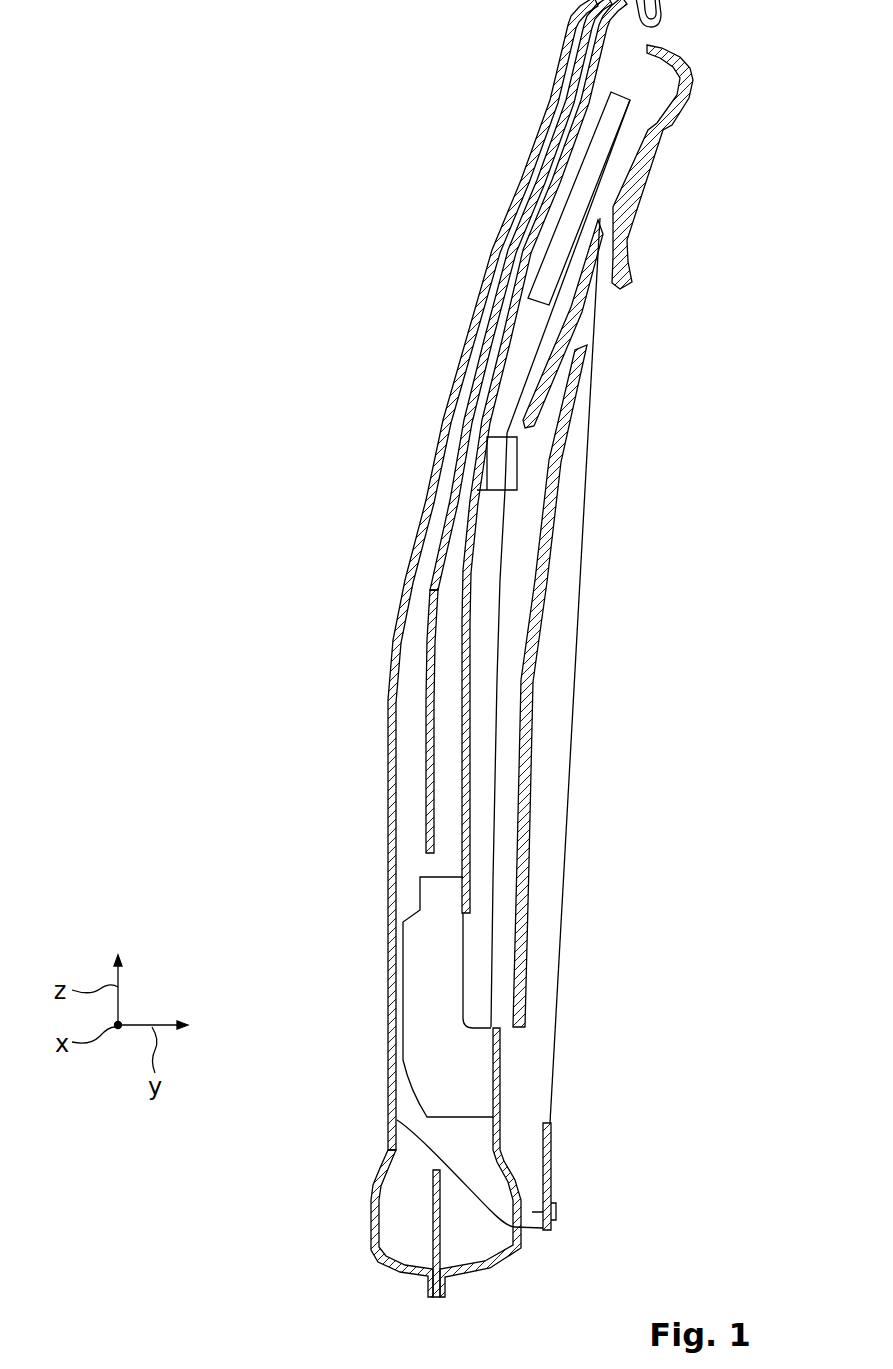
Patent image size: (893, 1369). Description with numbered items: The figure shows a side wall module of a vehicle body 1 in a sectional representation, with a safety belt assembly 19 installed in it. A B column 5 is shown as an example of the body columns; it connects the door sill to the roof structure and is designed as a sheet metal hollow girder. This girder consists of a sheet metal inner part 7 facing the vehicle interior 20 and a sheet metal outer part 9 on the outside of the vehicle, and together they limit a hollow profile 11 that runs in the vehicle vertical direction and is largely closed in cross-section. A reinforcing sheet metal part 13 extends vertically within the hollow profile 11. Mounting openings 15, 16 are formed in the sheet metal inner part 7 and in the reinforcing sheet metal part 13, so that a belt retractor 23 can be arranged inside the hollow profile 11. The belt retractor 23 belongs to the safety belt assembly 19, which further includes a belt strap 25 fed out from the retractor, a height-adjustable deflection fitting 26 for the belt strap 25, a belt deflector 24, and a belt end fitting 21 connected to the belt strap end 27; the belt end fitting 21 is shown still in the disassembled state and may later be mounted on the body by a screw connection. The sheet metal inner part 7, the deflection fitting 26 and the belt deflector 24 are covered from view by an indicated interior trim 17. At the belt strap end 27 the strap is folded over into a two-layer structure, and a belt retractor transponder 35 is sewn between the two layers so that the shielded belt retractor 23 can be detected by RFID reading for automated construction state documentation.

The vehicle body 1 is at (462, 242).
The B column 5 is at (470, 88).
The sheet metal inner part 7 is at (522, 205).
The sheet metal outer part 9 is at (553, 100).
The hollow profile 11 is at (560, 133).
The reinforcing sheet metal part 13 is at (548, 170).
The mounting opening 15 is at (437, 855).
The mounting opening 16 is at (467, 920).
The interior trim 17 is at (655, 156).
The safety belt assembly 19 is at (337, 240).
The vehicle interior 20 is at (626, 514).
The belt end fitting 21 is at (393, 1115).
The belt retractor 23 is at (418, 897).
The belt deflector 24 is at (493, 463).
The belt strap 25 is at (497, 765).
The deflection fitting 26 is at (553, 260).
The belt strap end 27 is at (566, 1171).
The belt retractor transponder 35 is at (553, 1143).